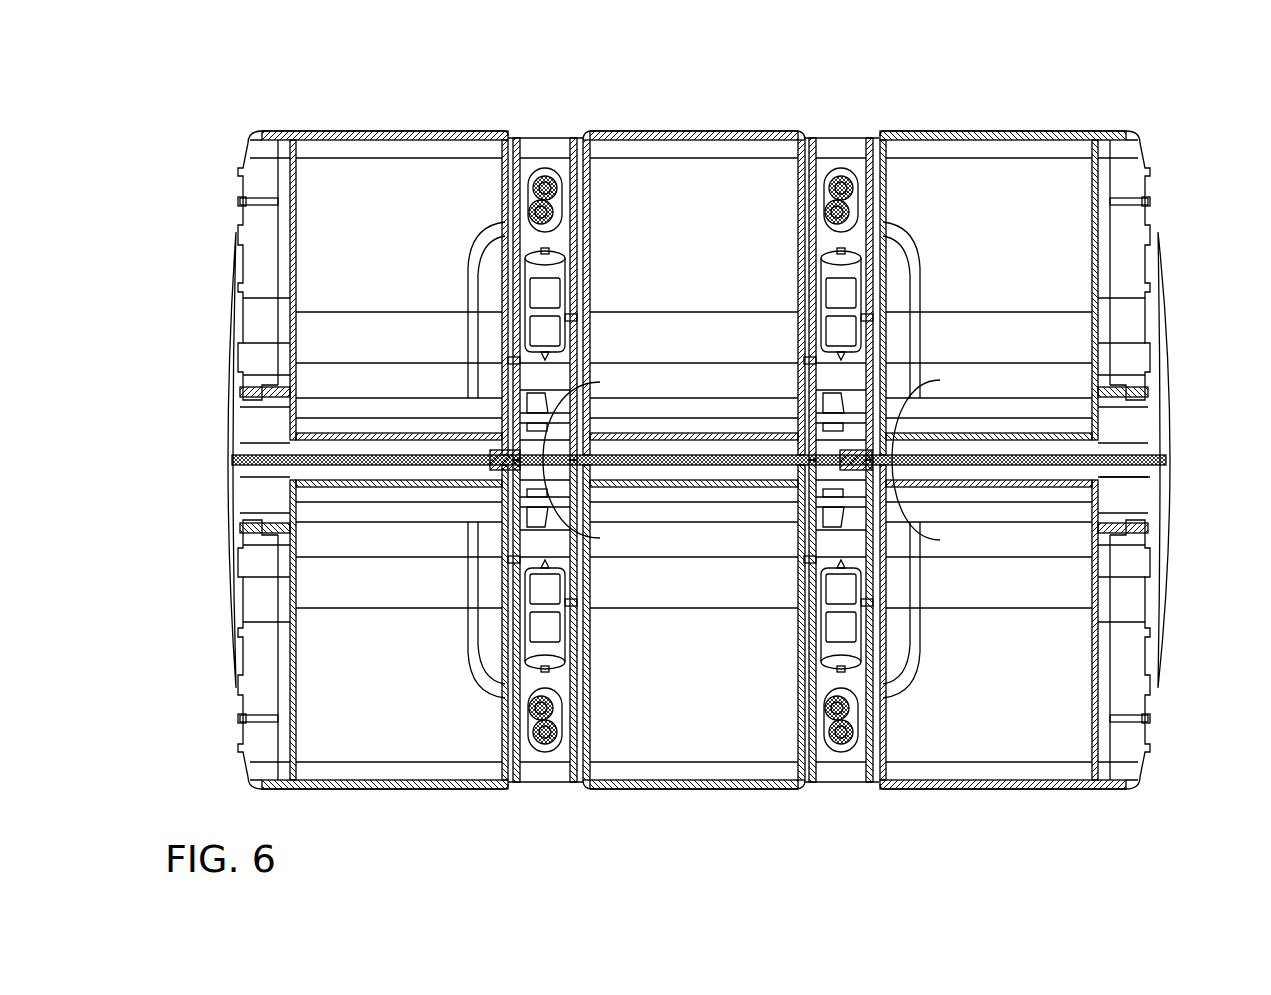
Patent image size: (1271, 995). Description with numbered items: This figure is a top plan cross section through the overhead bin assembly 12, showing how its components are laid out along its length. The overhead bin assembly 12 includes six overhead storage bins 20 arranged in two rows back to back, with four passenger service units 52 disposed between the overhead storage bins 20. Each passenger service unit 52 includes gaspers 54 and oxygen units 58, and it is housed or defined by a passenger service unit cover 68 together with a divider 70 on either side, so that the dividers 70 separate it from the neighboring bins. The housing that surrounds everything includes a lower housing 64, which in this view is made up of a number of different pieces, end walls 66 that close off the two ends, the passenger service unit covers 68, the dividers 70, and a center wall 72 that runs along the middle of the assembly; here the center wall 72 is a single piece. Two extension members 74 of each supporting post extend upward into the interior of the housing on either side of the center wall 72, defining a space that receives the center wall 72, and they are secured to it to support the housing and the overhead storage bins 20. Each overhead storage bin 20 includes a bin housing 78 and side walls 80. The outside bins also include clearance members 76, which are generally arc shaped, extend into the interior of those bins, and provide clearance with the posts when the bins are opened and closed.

The overhead bin assembly 12 is at (1195, 118).
The overhead storage bin 20 is at (437, 105).
The passenger service unit 52 is at (538, 122).
The gasper 54 is at (546, 182).
The oxygen unit 58 is at (546, 273).
The lower housing 64 is at (1130, 478).
The end wall 66 is at (1170, 392).
The passenger service unit cover 68 is at (566, 212).
The divider 70 is at (572, 327).
The center wall 72 is at (1133, 455).
The extension member 74 is at (593, 392).
The clearance member 76 is at (487, 292).
The bin housing 78 is at (380, 224).
The side wall 80 is at (503, 182).